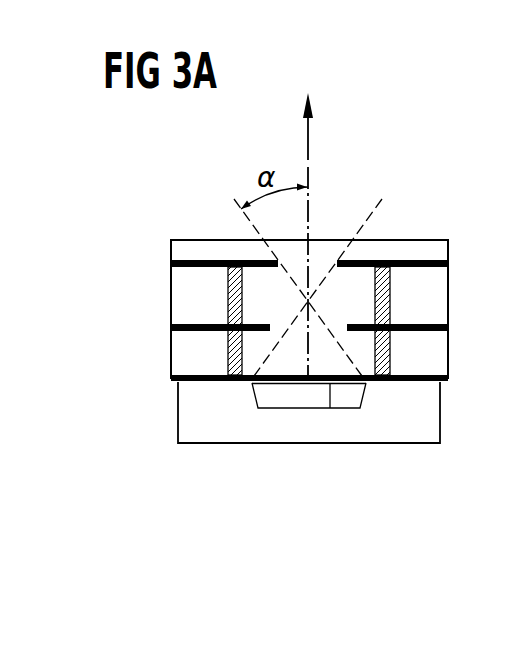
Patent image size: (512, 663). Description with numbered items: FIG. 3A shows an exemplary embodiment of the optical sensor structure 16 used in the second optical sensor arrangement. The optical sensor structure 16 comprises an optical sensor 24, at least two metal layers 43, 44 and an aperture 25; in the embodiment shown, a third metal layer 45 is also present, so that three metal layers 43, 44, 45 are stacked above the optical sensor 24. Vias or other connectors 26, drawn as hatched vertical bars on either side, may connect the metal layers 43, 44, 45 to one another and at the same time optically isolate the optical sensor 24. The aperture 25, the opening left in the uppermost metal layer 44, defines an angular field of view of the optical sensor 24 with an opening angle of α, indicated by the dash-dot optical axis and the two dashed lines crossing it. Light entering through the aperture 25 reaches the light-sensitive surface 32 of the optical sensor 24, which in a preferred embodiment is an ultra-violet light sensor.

The optical sensor structure 16 is at (217, 462).
The optical sensor 24 is at (285, 390).
The aperture 25 is at (323, 250).
The vias or other connectors 26 is at (227, 285).
The light-sensitive surface 32 is at (330, 408).
The metal layer 43 is at (442, 382).
The metal layer 44 is at (190, 258).
The metal layer 45 is at (172, 327).